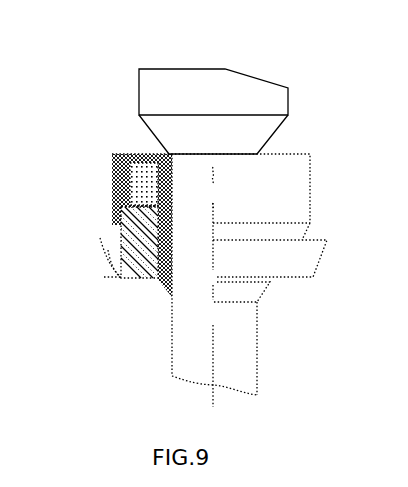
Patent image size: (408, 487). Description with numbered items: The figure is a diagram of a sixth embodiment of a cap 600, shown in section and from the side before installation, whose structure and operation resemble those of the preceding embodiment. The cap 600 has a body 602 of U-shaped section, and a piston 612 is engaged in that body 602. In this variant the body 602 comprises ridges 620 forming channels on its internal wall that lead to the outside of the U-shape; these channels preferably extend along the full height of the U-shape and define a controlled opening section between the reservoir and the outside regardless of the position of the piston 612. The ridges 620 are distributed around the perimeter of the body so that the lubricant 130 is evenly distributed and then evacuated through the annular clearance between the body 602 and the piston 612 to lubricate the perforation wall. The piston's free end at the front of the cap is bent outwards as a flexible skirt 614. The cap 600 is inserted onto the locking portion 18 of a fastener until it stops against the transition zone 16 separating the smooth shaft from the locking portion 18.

The transition zone 16 is at (237, 128).
The locking portion 18 is at (242, 353).
The lubricant 130 is at (140, 177).
The cap 600 is at (303, 128).
The body 602 is at (310, 202).
The piston 612 is at (298, 269).
The flexible skirt 614 is at (103, 260).
The ridges 620 is at (130, 188).